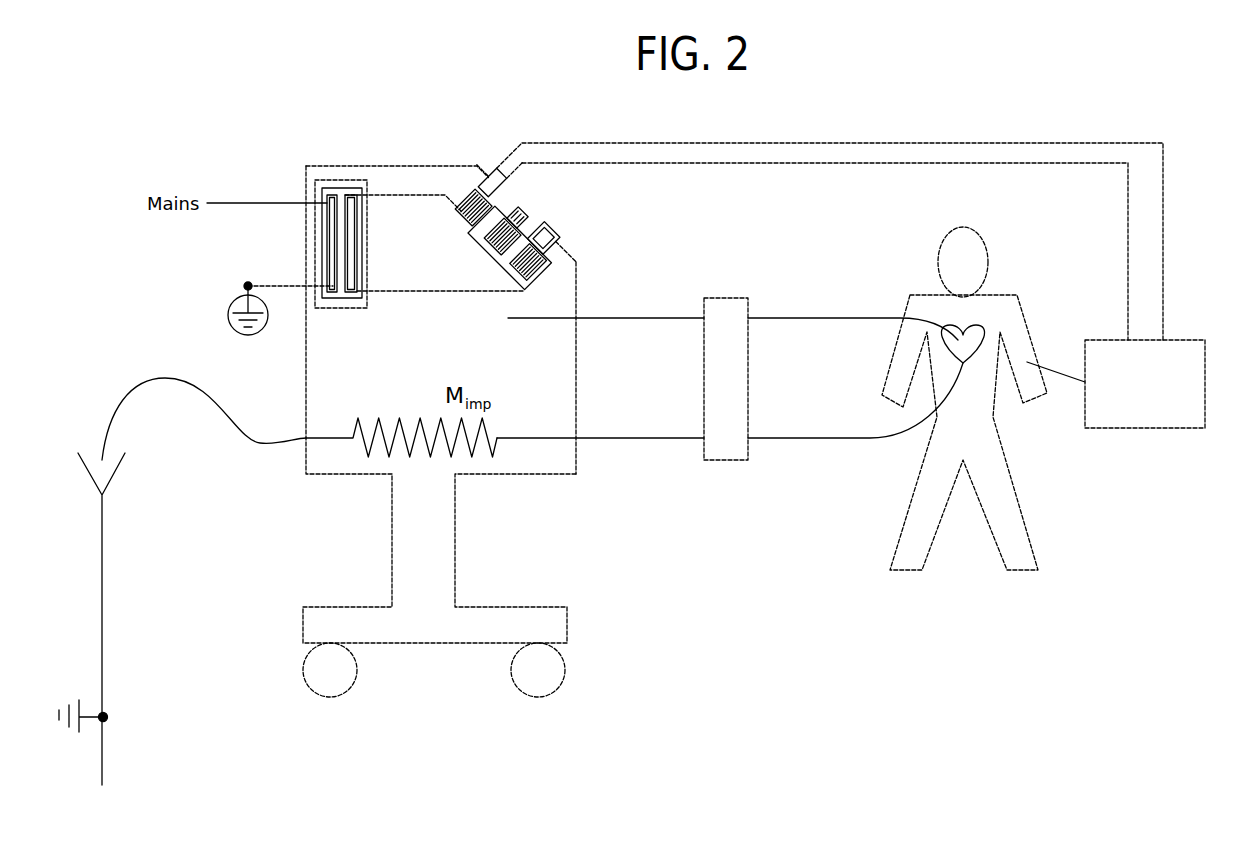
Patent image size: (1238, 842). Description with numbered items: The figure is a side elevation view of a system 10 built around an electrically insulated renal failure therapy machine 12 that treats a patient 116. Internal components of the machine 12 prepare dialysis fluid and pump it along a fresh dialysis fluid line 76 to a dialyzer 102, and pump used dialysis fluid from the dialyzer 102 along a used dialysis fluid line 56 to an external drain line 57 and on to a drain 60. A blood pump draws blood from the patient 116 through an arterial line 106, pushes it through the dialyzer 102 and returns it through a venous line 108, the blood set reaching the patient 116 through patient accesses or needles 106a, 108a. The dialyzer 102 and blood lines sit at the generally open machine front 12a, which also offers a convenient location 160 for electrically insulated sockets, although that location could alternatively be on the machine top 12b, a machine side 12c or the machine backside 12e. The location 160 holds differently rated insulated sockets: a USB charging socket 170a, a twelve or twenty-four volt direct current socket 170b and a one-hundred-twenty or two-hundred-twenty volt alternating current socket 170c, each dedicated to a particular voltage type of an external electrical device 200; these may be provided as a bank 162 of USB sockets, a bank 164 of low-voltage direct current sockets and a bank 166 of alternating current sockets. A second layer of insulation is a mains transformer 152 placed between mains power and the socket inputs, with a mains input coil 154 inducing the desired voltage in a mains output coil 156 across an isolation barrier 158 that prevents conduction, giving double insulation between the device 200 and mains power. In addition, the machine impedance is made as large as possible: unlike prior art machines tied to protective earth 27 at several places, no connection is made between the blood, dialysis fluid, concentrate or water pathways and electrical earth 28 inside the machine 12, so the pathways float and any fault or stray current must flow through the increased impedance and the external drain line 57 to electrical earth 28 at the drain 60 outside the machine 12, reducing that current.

The system 10 is at (313, 98).
The renal failure therapy machine 12 is at (302, 160).
The machine front 12a is at (484, 168).
The machine top 12b is at (352, 166).
The machine side 12c is at (414, 389).
The machine backside 12e is at (306, 466).
The protective earth 27 is at (228, 312).
The electrical earth 28 is at (63, 712).
The used dialysis fluid line 56 is at (552, 442).
The external drain line 57 is at (155, 378).
The drain 60 is at (115, 475).
The fresh dialysis fluid line 76 is at (565, 317).
The dialyzer 102 is at (728, 298).
The arterial line 106 is at (798, 437).
The patient access 106a is at (1000, 328).
The venous line 108 is at (828, 318).
The patient access 108a is at (955, 330).
The patient 116 is at (970, 262).
The mains transformer 152 is at (306, 333).
The mains input coil 154 is at (332, 222).
The mains output coil 156 is at (350, 296).
The isolation barrier 158 is at (342, 252).
The socket location 160 is at (560, 246).
The bank of USB sockets 162 is at (458, 198).
The bank of 12 VDC or 24 VDC sockets 164 is at (477, 254).
The bank of 120 VAC or 220 VAC sockets 166 is at (510, 276).
The USB socket 170a is at (500, 153).
The 12 VDC or 24 VDC socket 170b is at (526, 212).
The 120 VAC or 220 VAC socket 170c is at (553, 238).
The external electrical device 200 is at (1148, 428).